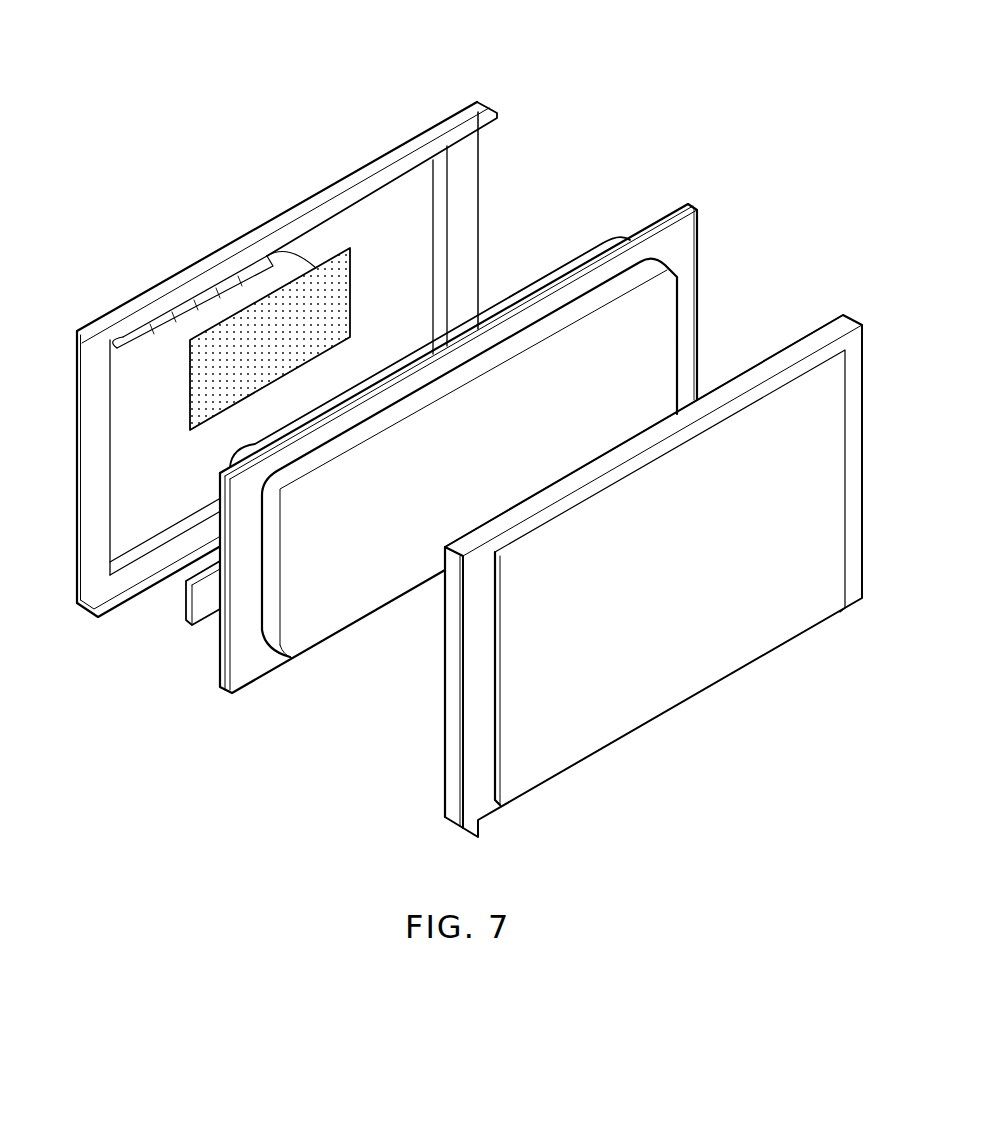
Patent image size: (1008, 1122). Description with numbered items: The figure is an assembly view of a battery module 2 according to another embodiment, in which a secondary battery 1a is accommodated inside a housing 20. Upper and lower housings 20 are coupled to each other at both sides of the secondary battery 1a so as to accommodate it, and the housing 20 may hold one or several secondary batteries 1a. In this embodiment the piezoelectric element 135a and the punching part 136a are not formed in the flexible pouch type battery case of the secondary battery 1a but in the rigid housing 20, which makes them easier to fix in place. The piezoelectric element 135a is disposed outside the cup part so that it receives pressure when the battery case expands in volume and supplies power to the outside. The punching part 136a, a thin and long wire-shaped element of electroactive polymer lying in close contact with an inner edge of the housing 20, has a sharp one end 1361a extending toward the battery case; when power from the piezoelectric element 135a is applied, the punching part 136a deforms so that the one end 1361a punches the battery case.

The battery module 2 is at (616, 72).
The secondary battery 1a is at (664, 222).
The housing 20 is at (452, 798).
The piezoelectric element 135a is at (318, 292).
The punching part 136a is at (197, 302).
The sharp one end 1361a is at (125, 331).